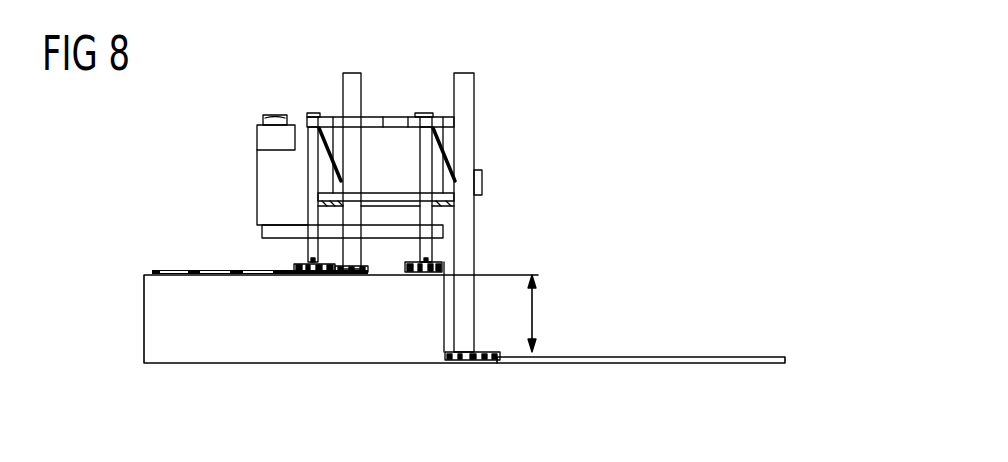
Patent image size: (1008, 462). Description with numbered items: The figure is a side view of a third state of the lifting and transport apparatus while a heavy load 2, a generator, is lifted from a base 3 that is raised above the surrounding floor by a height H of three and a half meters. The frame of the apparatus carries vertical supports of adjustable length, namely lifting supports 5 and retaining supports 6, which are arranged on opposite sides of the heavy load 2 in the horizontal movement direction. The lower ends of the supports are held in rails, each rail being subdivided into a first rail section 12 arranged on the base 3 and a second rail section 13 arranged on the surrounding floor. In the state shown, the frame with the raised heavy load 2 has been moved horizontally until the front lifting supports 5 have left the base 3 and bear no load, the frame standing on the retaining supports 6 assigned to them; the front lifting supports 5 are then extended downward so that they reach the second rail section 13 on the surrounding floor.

The heavy load 2 is at (267, 163).
The base 3 is at (157, 317).
The lifting support 5 is at (465, 95).
The retaining support 6 is at (310, 144).
The first rail section 12 is at (180, 270).
The second rail section 13 is at (715, 357).
The height H is at (530, 313).